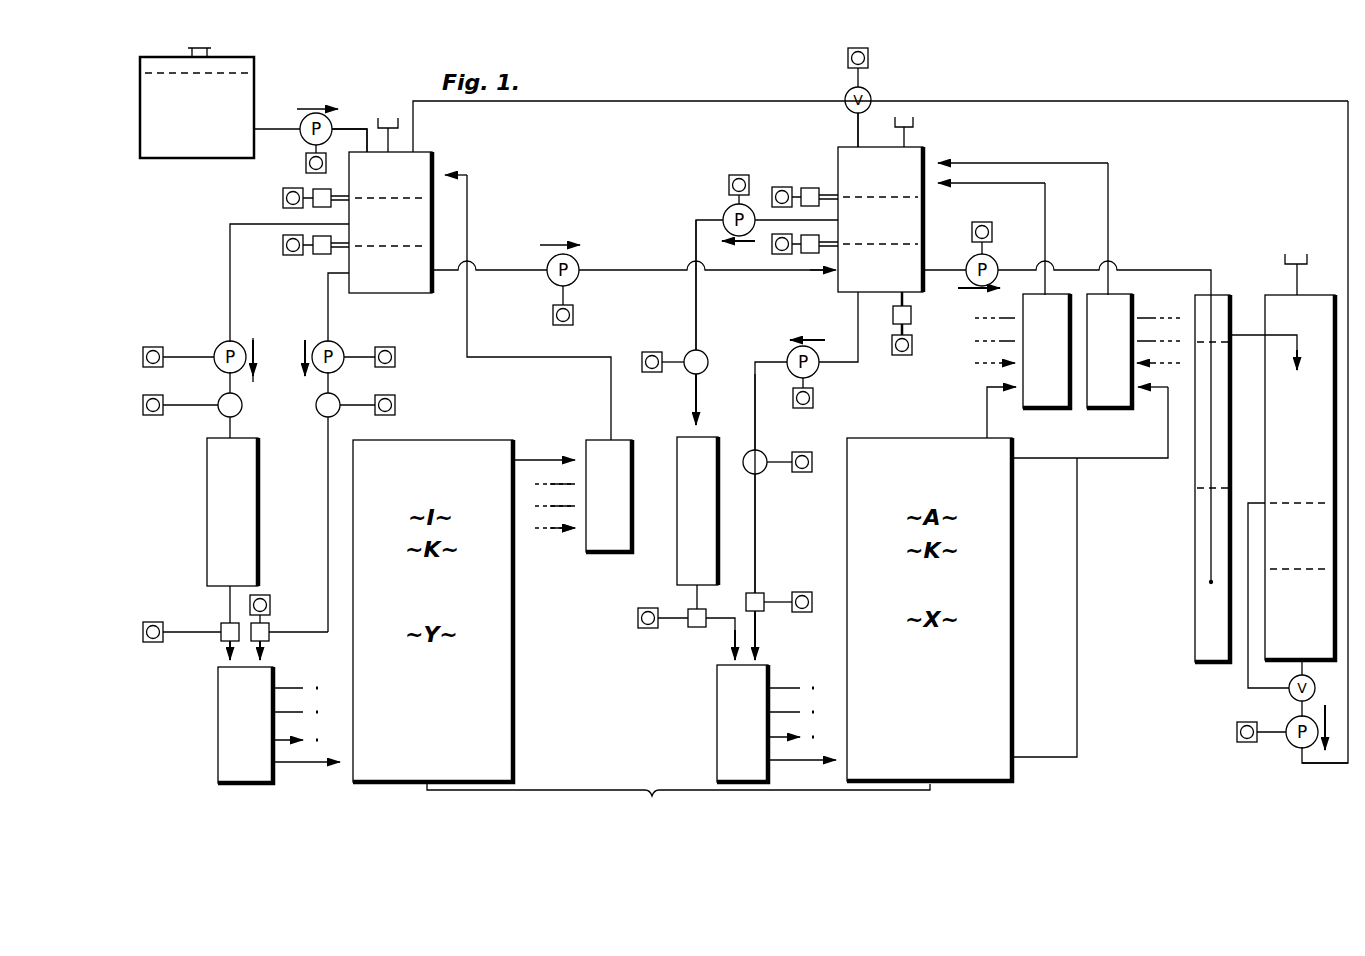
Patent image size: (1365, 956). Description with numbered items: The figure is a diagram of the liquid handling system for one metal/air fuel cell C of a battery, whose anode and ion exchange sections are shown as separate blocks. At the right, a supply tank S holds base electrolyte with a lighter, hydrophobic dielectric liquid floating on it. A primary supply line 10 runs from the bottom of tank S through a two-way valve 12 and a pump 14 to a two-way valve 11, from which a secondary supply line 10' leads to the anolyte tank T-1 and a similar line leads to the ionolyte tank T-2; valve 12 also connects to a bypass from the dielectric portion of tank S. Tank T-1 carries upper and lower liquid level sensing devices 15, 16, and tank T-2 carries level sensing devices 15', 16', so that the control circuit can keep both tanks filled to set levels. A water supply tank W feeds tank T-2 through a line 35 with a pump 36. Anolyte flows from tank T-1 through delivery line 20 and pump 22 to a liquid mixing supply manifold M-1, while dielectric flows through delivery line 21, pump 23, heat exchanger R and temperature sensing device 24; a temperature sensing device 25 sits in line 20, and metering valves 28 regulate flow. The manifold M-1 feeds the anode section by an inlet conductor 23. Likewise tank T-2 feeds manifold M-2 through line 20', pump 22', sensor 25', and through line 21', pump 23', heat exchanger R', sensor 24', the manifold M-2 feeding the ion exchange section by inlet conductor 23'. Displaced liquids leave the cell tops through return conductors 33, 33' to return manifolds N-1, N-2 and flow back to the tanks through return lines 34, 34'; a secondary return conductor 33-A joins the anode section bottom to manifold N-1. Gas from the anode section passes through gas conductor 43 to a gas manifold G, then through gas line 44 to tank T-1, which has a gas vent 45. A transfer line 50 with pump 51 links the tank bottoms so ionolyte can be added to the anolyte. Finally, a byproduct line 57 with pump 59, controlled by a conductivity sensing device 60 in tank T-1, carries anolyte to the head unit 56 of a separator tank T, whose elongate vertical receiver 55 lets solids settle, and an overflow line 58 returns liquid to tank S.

The primary supply line 10 is at (1232, 413).
The secondary supply line 10' is at (814, 130).
The two-way valve 11 is at (870, 93).
The two-way valve 12 is at (1289, 692).
The pump 14 is at (1292, 746).
The upper liquid level sensing device 15 is at (805, 184).
The upper liquid level sensing device 15' is at (299, 187).
The lower liquid level sensing device 16 is at (796, 268).
The lower liquid level sensing device 16' is at (299, 262).
The delivery line 20 is at (778, 483).
The delivery line 20' is at (308, 307).
The dielectric delivery line 21 is at (664, 285).
The dielectric delivery line 21' is at (254, 283).
The pump 22 is at (806, 442).
The pump 22' is at (356, 472).
The pump / inlet conductor 23 is at (744, 480).
The pump / inlet conductor 23' is at (241, 553).
The temperature sensing device 24 is at (686, 627).
The temperature sensing device 24' is at (191, 627).
The temperature sensing device 25 is at (779, 626).
The temperature sensing device 25' is at (289, 629).
The metering valve 28 is at (241, 408).
The return conductor 33 is at (1090, 441).
The return conductor 33' is at (544, 465).
The secondary return conductor 33-A is at (1078, 546).
The return line 34 is at (1045, 229).
The return line 34' is at (528, 307).
The line 35 is at (363, 128).
The pump 36 is at (303, 120).
The gas conductor 43 is at (985, 410).
The gas line 44 is at (1046, 192).
The gas vent 45 is at (916, 133).
The transfer line 50 is at (503, 268).
The pump 51 is at (575, 262).
The elongate vertical receiver 55 is at (1195, 578).
The head unit 56 is at (1218, 294).
The byproduct line 57 is at (1158, 268).
The overflow line 58 is at (1243, 334).
The pump 59 is at (990, 257).
The conductivity sensing device 60 is at (897, 332).
The water supply tank W is at (197, 103).
The anolyte tank T-1 is at (935, 150).
The ionolyte tank T-2 is at (440, 152).
The heat exchanger R is at (673, 479).
The heat exchanger R' is at (251, 512).
The liquid mixing supply manifold M-1 is at (712, 718).
The liquid mixing manifold M-2 is at (214, 740).
The return manifold N-1 is at (1112, 413).
The return manifold N-2 is at (588, 556).
The gas manifold G is at (1016, 374).
The metal/air fuel cell C is at (678, 780).
The separator tank T is at (1192, 632).
The supply tank S is at (1300, 457).